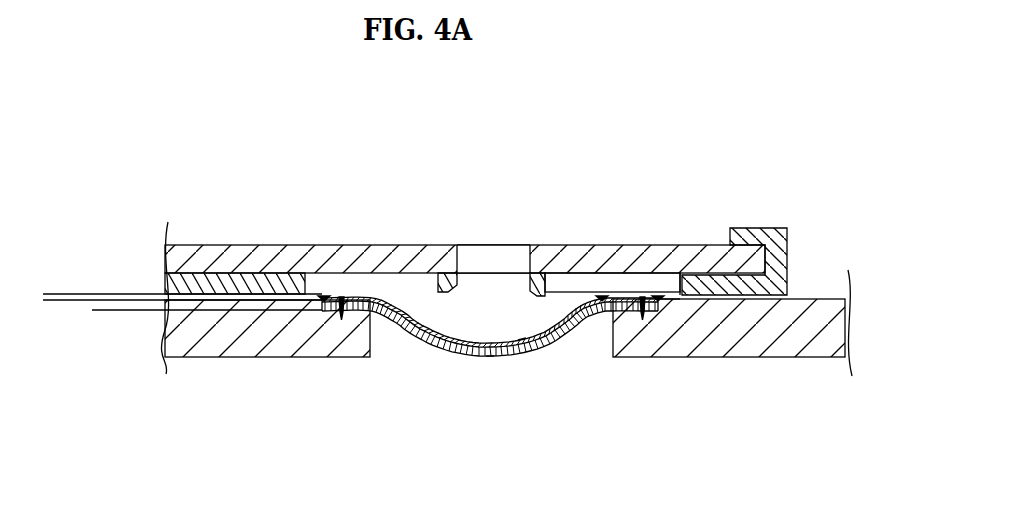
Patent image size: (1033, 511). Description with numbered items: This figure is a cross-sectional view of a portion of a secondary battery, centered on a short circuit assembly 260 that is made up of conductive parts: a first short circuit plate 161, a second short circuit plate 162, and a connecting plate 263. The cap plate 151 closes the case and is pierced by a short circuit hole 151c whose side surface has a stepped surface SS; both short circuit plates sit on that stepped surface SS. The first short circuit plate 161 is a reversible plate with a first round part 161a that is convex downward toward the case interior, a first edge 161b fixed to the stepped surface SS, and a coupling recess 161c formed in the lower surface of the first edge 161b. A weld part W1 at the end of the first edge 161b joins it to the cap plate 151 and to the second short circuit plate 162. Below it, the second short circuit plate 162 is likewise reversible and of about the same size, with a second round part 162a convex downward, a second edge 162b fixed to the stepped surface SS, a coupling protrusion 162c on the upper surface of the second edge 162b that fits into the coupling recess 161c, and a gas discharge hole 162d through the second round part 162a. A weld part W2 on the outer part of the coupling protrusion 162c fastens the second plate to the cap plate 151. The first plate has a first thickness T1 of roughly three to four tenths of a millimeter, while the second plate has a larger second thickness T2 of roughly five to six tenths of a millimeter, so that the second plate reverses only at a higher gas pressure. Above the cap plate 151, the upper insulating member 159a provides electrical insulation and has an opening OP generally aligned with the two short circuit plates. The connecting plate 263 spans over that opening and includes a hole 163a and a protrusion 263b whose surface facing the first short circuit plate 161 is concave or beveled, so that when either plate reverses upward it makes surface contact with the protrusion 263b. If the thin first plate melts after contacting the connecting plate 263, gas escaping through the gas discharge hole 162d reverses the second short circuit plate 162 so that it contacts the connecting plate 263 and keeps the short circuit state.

The short circuit assembly 260 is at (750, 176).
The upper insulating member 159a is at (245, 287).
The weld part W1 is at (316, 293).
The weld part W2 is at (346, 297).
The protrusion 263b is at (437, 301).
The hole 163a is at (498, 262).
The short circuit hole 151c is at (587, 295).
The connecting plate 263 is at (652, 262).
The opening OP is at (681, 283).
The first thickness T1 is at (47, 326).
The second thickness T2 is at (98, 330).
The cap plate 151 is at (205, 340).
The first short circuit plate 161 is at (422, 450).
The first round part 161a is at (420, 322).
The first edge 161b is at (332, 306).
The coupling recess 161c is at (352, 308).
The second short circuit plate 162 is at (735, 457).
The second round part 162a is at (522, 347).
The second edge 162b is at (617, 312).
The coupling protrusion 162c is at (645, 312).
The gas discharge hole 162d is at (490, 357).
The stepped surface SS is at (665, 303).